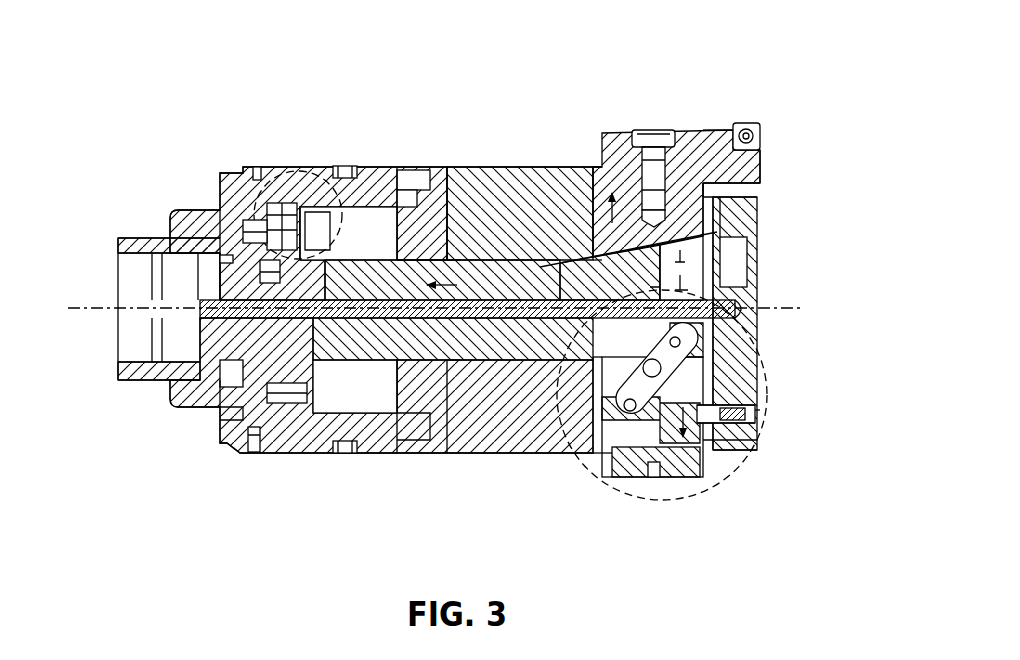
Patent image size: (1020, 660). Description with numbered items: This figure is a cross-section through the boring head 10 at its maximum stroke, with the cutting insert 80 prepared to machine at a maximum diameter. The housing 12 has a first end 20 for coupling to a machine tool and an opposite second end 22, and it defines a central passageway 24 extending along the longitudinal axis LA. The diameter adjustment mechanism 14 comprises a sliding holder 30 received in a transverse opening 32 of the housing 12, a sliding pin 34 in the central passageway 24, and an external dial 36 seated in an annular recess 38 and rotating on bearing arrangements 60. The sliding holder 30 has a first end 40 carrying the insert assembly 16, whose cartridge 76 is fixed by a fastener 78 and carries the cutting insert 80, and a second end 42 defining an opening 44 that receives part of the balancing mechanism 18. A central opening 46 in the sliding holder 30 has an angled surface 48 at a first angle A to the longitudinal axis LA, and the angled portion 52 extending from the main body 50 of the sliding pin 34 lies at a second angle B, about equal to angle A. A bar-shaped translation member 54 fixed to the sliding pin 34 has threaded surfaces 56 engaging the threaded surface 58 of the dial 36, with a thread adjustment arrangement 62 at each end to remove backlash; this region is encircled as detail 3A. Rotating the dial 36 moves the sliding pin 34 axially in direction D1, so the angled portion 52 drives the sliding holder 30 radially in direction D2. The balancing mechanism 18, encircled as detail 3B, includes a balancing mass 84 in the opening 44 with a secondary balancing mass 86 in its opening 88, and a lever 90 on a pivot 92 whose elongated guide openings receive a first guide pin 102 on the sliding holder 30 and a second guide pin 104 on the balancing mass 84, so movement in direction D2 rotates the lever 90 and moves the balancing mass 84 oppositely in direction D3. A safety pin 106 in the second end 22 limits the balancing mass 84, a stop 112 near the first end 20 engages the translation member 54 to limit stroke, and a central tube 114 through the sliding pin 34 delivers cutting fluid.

The boring head 10 is at (305, 72).
The housing 12 is at (505, 262).
The diameter adjustment mechanism 14 is at (281, 470).
The insert assembly 16 is at (722, 108).
The balancing mechanism 18 is at (580, 470).
The first end 20 is at (193, 232).
The second end 22 is at (735, 450).
The central passageway 24 is at (447, 352).
The sliding holder 30 is at (762, 170).
The transverse opening 32 is at (708, 265).
The sliding pin 34 is at (428, 362).
The external dial 36 is at (368, 185).
The recess 38 is at (245, 418).
The first end 40 is at (725, 126).
The second end 42 is at (545, 425).
The opening 44 is at (706, 378).
The central opening 46 is at (706, 192).
The angled surface 48 is at (540, 195).
The main body 50 is at (370, 352).
The angled portion 52 is at (474, 265).
The translation member 54 is at (293, 268).
The threaded surfaces 56 is at (306, 188).
The threaded surface 58 is at (344, 172).
The bearing arrangements 60 is at (268, 430).
The thread adjustment arrangement 62 is at (298, 178).
The cartridge 76 is at (614, 145).
The fastener 78 is at (655, 150).
The cutting insert 80 is at (760, 150).
The balancing mass 84 is at (643, 442).
The secondary balancing mass 86 is at (675, 463).
The opening 88 is at (683, 458).
The lever 90 is at (700, 403).
The pivot 92 is at (702, 305).
The first guide pin 102 is at (752, 335).
The second guide pin 104 is at (628, 448).
The safety pin 106 is at (745, 417).
The stop 112 is at (268, 393).
The central tube 114 is at (397, 183).
The detail circle 3A is at (278, 165).
The detail circle 3B is at (766, 398).
The first angle A is at (515, 438).
The second angle B is at (452, 235).
The direction D1 is at (446, 280).
The direction D2 is at (560, 240).
The direction D3 is at (735, 420).
The longitudinal axis LA is at (107, 320).